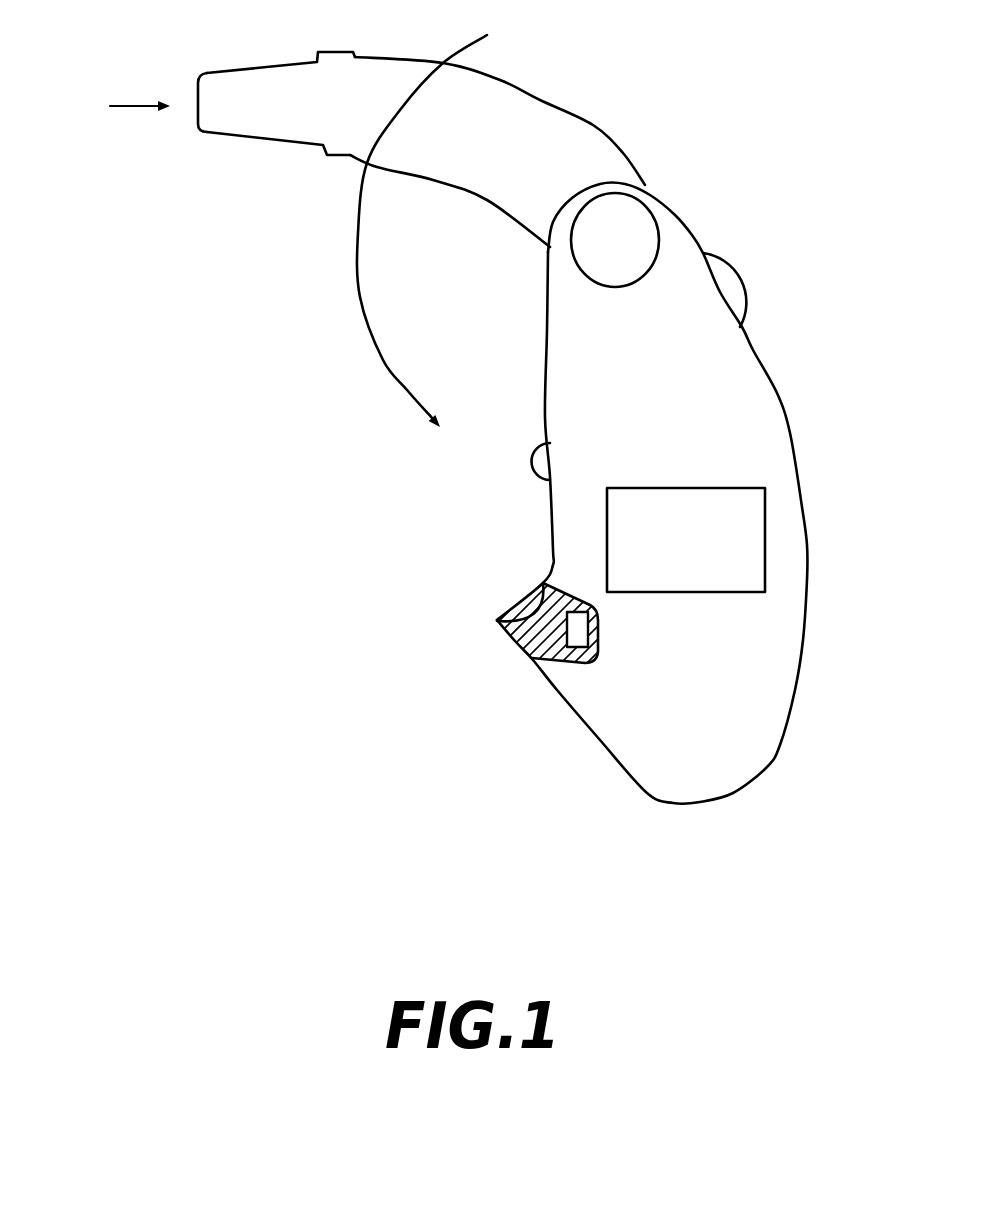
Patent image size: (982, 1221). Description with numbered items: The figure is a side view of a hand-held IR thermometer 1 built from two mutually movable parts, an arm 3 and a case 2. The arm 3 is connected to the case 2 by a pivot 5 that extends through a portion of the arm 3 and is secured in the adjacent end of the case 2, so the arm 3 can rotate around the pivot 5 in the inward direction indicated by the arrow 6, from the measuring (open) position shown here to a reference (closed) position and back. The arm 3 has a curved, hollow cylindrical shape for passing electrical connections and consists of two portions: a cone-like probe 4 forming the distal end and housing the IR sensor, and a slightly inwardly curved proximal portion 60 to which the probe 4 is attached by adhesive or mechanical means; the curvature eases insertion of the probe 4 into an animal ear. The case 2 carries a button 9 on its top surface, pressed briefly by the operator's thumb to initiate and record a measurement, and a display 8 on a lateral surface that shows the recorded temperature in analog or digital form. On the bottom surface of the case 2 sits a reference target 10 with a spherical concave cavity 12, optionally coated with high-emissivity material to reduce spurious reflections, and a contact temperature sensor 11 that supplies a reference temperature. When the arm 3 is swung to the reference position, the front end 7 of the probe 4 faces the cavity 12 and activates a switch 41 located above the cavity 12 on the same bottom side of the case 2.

The IR thermometer 1 is at (216, 464).
The case 2 is at (777, 393).
The arm 3 is at (596, 112).
The probe 4 is at (273, 135).
The pivot 5 is at (637, 198).
The arrow 6 is at (357, 275).
The front end 7 is at (200, 117).
The display 8 is at (738, 517).
The button 9 is at (740, 263).
The reference target 10 is at (517, 642).
The contact temperature sensor 11 is at (577, 635).
The cavity 12 is at (530, 603).
The switch 41 is at (538, 445).
The proximal portion 60 is at (470, 147).